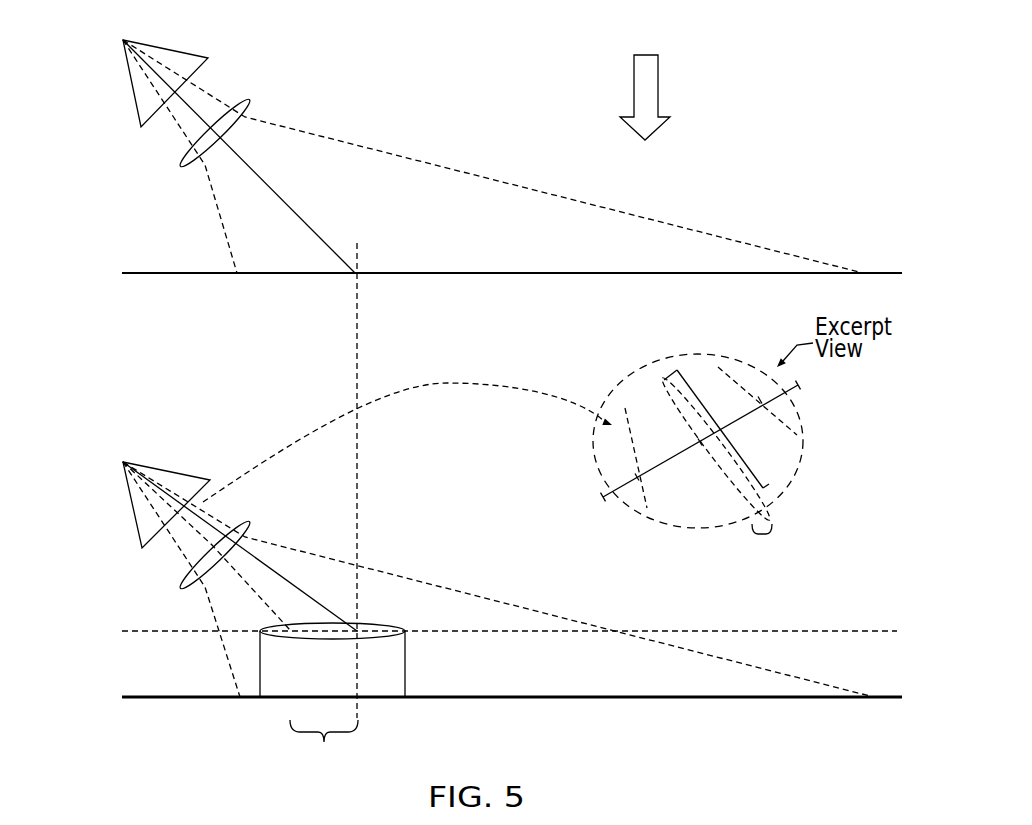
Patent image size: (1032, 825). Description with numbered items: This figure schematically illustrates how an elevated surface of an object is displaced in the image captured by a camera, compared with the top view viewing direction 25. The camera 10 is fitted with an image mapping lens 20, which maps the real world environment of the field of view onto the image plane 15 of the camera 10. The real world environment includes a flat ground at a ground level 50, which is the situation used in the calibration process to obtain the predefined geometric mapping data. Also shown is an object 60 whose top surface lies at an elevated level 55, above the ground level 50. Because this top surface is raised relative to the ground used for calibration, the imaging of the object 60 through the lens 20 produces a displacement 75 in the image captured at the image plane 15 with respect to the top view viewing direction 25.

The camera 10 is at (170, 592).
The image mapping lens 20 is at (285, 88).
The top view viewing direction 25 is at (883, 114).
The ground level 50 is at (192, 742).
The elevated level 55 is at (165, 642).
The object 60 is at (416, 658).
The image plane 15 is at (804, 400).
The displacement 75 is at (890, 567).